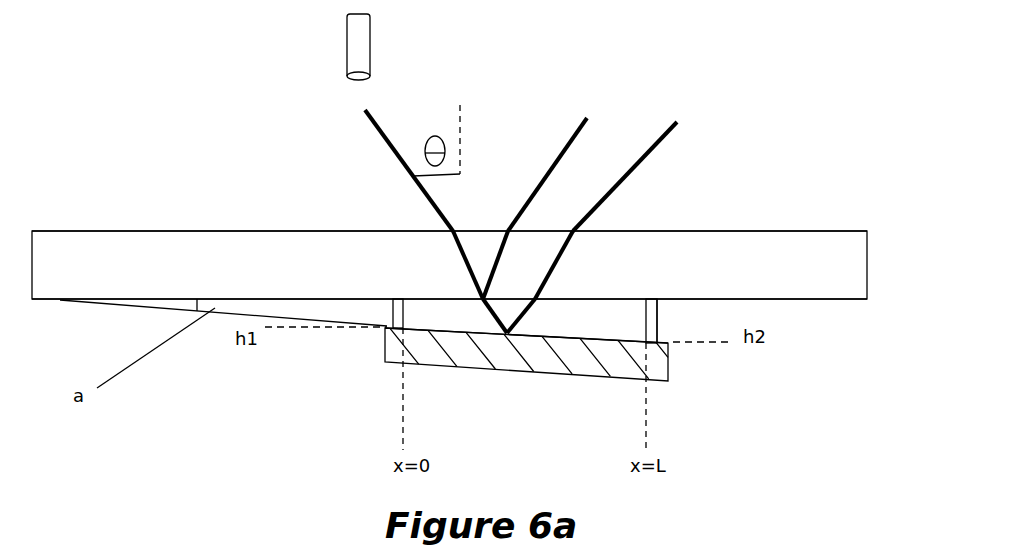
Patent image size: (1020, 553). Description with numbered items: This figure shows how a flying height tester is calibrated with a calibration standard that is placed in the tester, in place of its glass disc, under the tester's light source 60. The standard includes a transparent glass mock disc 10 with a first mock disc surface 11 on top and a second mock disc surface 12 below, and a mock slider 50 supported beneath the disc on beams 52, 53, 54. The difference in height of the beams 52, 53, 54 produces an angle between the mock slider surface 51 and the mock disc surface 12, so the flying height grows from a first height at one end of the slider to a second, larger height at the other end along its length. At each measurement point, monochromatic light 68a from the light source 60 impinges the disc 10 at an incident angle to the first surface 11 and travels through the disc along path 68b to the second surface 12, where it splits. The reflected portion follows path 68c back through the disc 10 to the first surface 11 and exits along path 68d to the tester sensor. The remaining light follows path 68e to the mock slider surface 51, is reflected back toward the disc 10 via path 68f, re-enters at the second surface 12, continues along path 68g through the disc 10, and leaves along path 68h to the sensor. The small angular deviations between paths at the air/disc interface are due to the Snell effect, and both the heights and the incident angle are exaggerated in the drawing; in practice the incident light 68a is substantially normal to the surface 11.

The mock disc 10 is at (812, 263).
The first mock disc surface 11 is at (708, 230).
The second mock disc surface 12 is at (776, 300).
The mock slider 50 is at (512, 358).
The mock slider surface 51 is at (487, 358).
The beam 52 is at (670, 343).
The beam 53 is at (704, 394).
The beam 54 is at (393, 318).
The light source 60 is at (358, 60).
The monochromatic light 68a is at (388, 143).
The path 68b is at (464, 258).
The path 68c is at (493, 232).
The path 68d is at (547, 164).
The path 68e is at (492, 320).
The path 68f is at (540, 350).
The path 68g is at (578, 265).
The path 68h is at (632, 176).